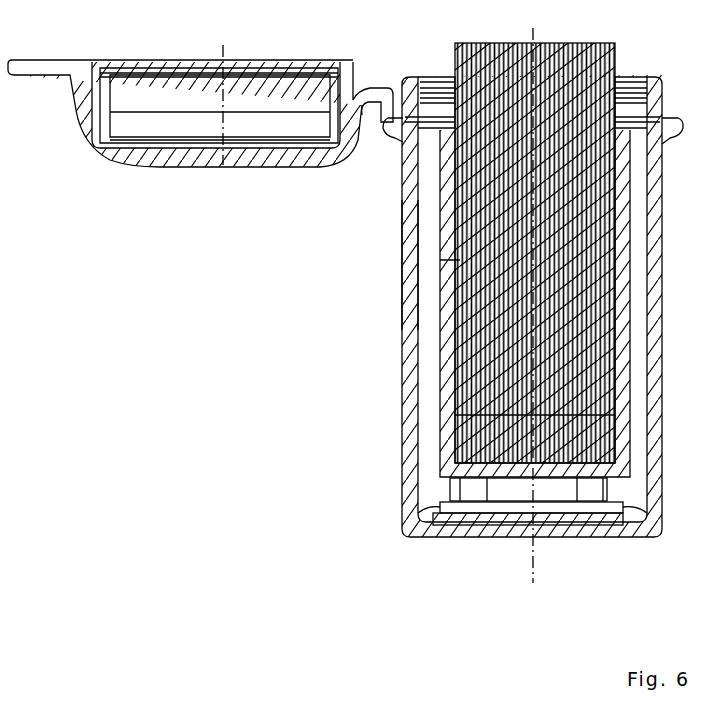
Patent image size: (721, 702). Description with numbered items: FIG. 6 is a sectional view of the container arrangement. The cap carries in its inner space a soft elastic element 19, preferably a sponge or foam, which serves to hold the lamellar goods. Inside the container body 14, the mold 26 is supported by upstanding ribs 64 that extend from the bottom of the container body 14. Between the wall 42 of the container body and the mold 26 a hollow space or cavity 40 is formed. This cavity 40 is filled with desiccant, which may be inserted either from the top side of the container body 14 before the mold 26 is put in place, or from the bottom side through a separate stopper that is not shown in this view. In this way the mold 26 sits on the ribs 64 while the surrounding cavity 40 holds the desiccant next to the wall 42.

The container body 14 is at (650, 370).
The soft elastic element 19 is at (180, 125).
The mold 26 is at (452, 383).
The cavity 40 is at (433, 317).
The wall 42 is at (403, 262).
The upstanding ribs 64 is at (455, 488).